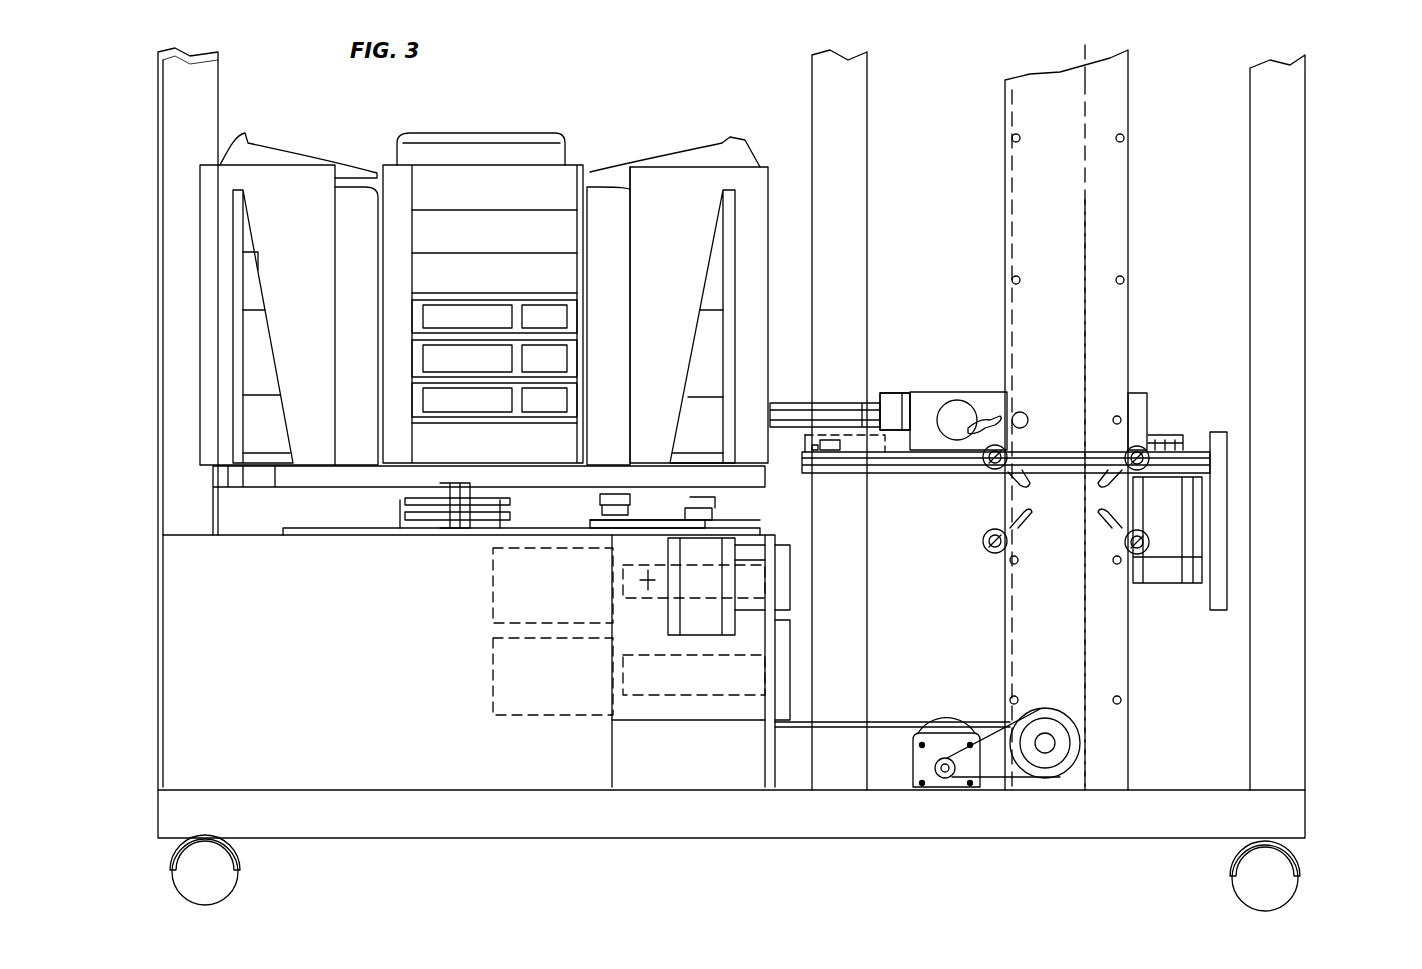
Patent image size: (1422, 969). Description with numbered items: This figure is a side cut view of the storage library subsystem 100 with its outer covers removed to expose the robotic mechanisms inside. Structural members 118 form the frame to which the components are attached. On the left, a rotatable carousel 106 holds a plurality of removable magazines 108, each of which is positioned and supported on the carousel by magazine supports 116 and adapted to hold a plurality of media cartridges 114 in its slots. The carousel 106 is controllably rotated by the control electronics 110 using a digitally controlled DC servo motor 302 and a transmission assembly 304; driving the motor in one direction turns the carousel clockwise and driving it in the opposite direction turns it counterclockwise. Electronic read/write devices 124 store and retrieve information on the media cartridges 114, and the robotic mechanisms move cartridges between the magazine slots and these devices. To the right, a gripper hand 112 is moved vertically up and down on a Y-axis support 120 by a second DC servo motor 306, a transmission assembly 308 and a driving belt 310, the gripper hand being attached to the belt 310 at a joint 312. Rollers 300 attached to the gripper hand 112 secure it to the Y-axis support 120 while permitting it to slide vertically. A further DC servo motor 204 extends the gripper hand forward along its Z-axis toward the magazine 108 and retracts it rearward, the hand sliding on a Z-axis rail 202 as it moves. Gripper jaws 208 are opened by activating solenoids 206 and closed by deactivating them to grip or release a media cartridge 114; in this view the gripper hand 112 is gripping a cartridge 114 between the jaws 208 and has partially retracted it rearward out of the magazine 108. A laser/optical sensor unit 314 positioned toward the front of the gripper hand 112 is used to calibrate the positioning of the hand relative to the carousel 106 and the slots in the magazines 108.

The storage library subsystem 100 is at (1388, 173).
The rotatable carousel 106 is at (215, 472).
The magazines 108 is at (268, 166).
The control electronics 110 is at (352, 757).
The gripper hand 112 is at (1138, 393).
The media cartridges 114 is at (555, 400).
The magazine supports 116 is at (345, 322).
The structural members 118 is at (192, 90).
The Y-axis support 120 is at (1120, 88).
The electronic read/write devices 124 is at (490, 650).
The Z-axis rail 202 is at (885, 475).
The DC servo motor 204 is at (1170, 575).
The solenoids 206 is at (988, 410).
The gripper jaws 208 is at (893, 393).
The rollers 300 is at (1127, 455).
The DC servo motor 302 is at (705, 650).
The transmission assembly 304 is at (575, 545).
The DC servo motor 306 is at (935, 790).
The transmission assembly 308 is at (1045, 707).
The driving belt 310 is at (1085, 200).
The joint 312 is at (1025, 412).
The laser/optical sensor unit 314 is at (830, 470).